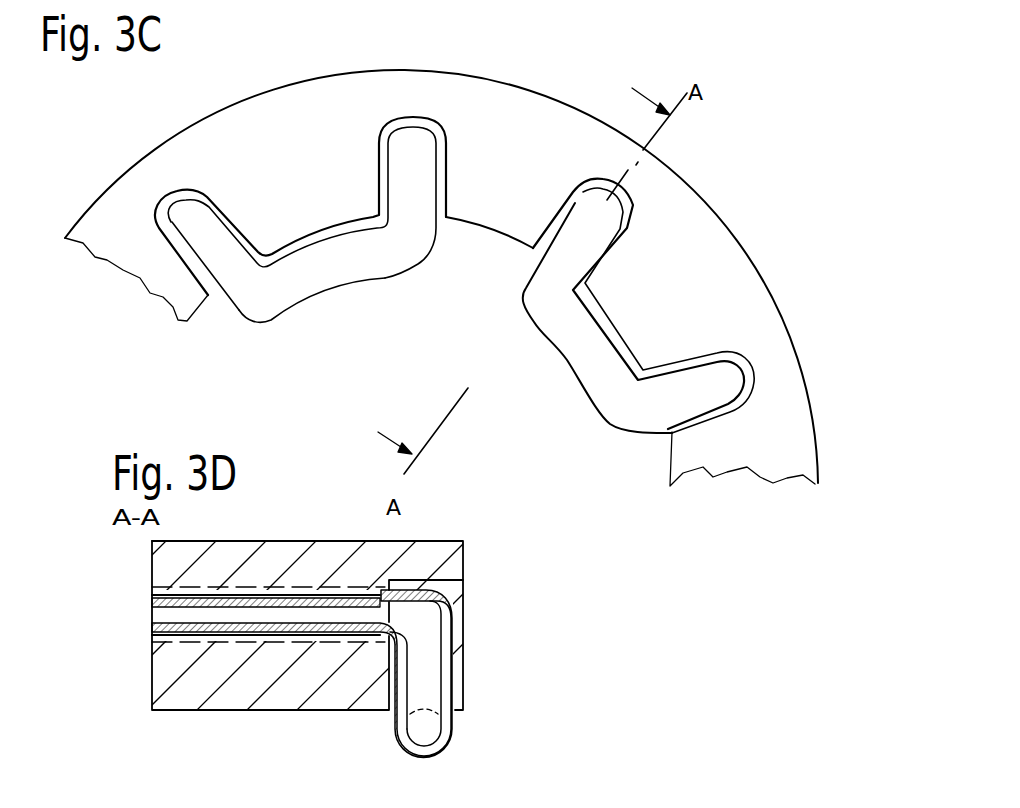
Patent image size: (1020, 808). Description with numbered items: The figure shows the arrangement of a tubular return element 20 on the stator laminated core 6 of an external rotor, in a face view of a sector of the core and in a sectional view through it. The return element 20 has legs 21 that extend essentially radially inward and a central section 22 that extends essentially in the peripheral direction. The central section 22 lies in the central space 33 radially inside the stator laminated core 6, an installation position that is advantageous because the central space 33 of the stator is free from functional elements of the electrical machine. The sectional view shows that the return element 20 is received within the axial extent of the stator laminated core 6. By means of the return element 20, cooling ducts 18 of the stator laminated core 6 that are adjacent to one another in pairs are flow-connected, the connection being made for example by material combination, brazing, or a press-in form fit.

In FIG. 3C, the stator laminated core 6 is at (509, 103).
In FIG. 3D, the stator laminated core 6 is at (267, 553).
In FIG. 3D, the cooling ducts 18 is at (152, 642).
In FIG. 3C, the return element 20 is at (364, 294).
In FIG. 3D, the return element 20 is at (459, 725).
In FIG. 3C, the legs 21 is at (587, 212).
In FIG. 3C, the central section 22 is at (598, 359).
In FIG. 3C, the central space 33 is at (362, 364).